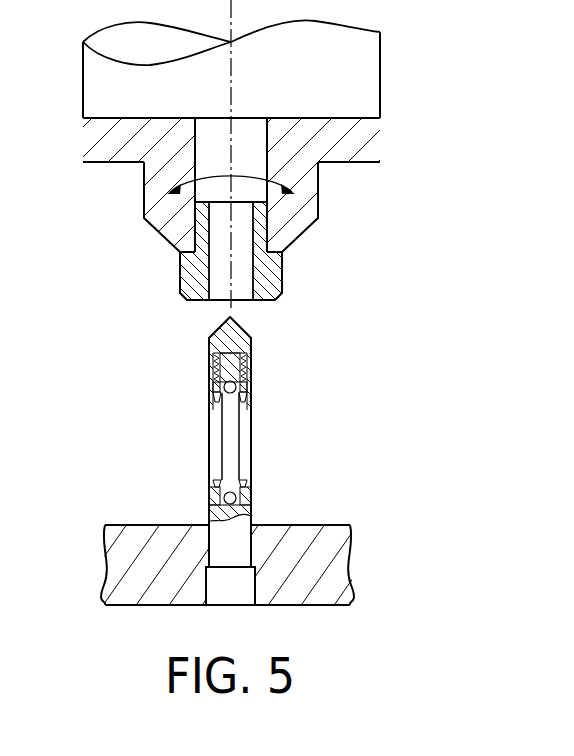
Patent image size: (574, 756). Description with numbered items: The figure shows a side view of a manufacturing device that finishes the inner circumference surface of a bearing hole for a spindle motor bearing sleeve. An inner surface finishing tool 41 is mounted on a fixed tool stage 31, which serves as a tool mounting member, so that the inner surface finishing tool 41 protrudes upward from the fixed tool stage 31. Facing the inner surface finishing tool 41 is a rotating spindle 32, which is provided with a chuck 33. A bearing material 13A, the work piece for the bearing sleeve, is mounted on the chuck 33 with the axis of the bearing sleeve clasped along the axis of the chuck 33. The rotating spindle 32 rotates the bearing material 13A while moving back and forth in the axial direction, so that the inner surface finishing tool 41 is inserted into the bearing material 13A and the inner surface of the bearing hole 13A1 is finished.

The fixed tool stage 31 is at (335, 584).
The rotating spindle 32 is at (355, 72).
The chuck 33 is at (302, 200).
The bearing material 13A is at (182, 284).
The bearing hole 13A1 is at (210, 284).
The inner surface finishing tool 41 is at (253, 438).